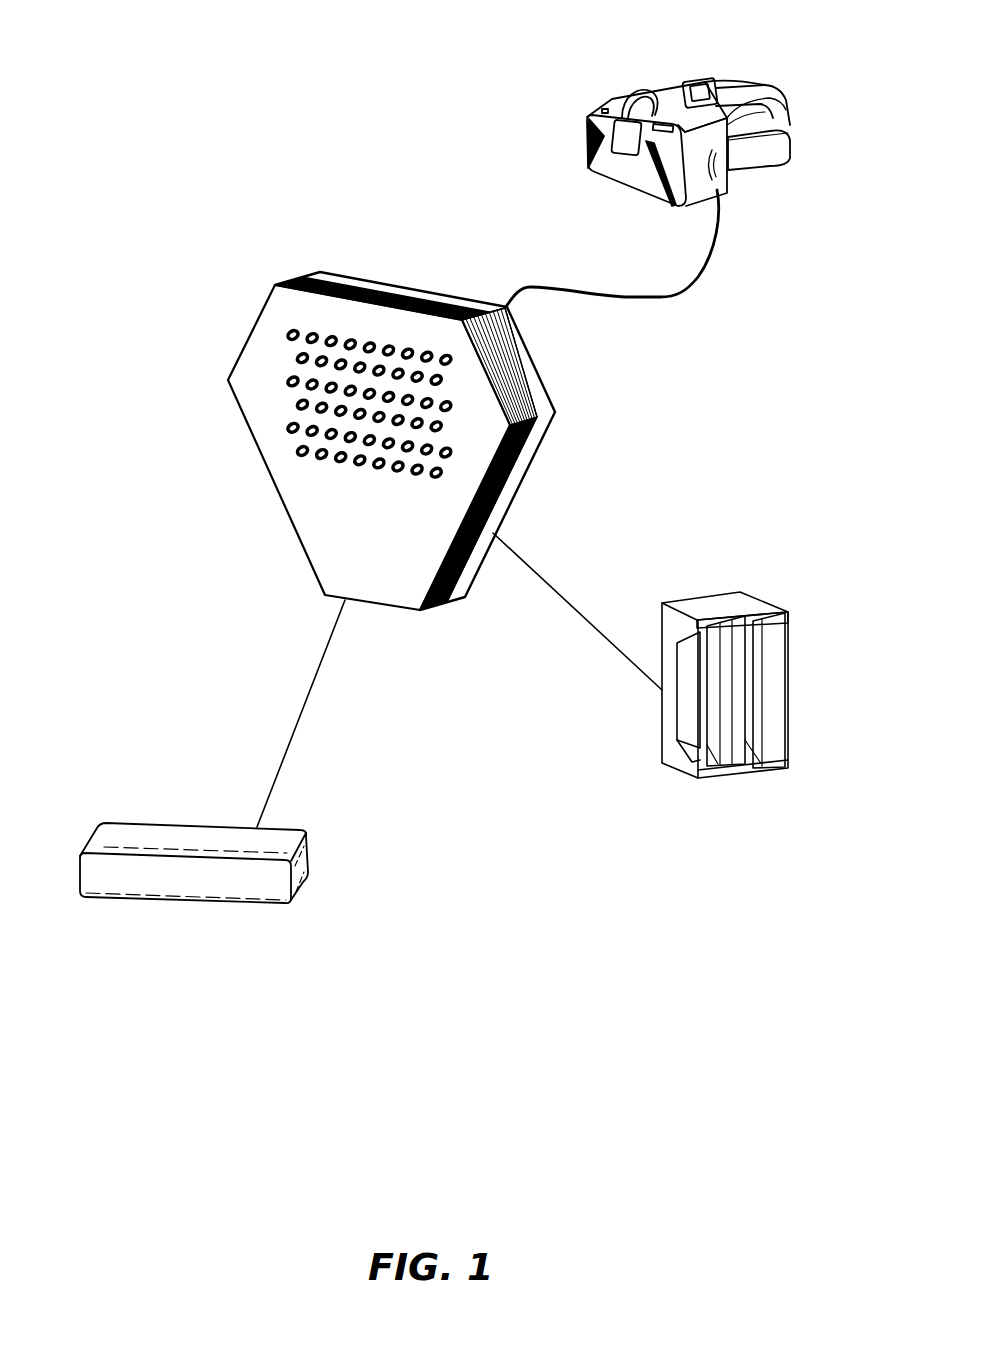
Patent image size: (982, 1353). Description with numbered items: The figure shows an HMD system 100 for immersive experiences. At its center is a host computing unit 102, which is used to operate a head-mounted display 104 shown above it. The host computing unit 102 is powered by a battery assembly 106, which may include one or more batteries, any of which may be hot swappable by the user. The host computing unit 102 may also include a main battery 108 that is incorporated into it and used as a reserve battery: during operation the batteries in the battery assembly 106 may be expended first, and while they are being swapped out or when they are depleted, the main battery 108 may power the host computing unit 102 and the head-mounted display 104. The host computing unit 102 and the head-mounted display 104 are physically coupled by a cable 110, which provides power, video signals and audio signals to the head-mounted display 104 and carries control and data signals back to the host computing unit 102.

The HMD system 100 is at (449, 44).
The host computing unit 102 is at (337, 275).
The head-mounted display 104 is at (602, 108).
The battery assembly 106 is at (668, 602).
The main battery 108 is at (165, 823).
The cable 110 is at (707, 268).